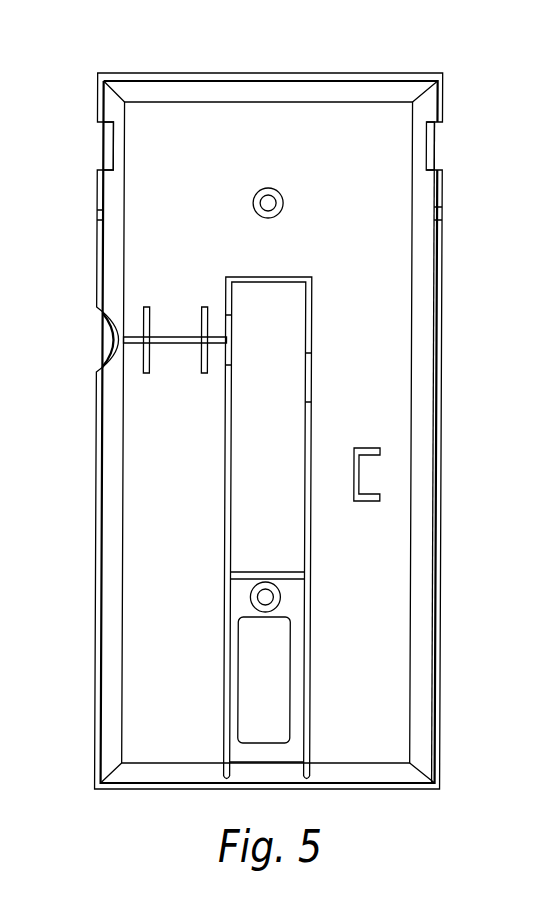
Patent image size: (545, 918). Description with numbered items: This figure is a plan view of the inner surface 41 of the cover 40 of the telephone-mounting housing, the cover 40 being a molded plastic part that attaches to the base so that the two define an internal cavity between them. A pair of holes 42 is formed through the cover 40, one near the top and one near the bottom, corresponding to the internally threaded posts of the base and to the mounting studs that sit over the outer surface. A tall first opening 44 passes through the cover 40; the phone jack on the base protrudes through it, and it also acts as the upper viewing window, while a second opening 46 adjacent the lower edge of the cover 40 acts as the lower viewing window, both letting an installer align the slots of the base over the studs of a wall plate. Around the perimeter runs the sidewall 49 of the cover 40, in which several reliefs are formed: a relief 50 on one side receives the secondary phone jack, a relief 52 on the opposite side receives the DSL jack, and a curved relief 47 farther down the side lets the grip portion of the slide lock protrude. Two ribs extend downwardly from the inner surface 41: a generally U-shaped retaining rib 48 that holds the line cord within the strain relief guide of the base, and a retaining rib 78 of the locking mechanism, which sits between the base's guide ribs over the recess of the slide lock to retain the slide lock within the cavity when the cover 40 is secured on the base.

The cover 40 is at (183, 72).
The inner surface 41 is at (370, 163).
The holes 42 is at (263, 189).
The first opening 44 is at (243, 465).
The second opening 46 is at (258, 668).
The relief 47 is at (100, 343).
The retaining rib 48 is at (363, 466).
The sidewall 49 is at (95, 590).
The relief 50 is at (100, 146).
The relief 52 is at (443, 148).
The retaining rib 78 is at (183, 336).